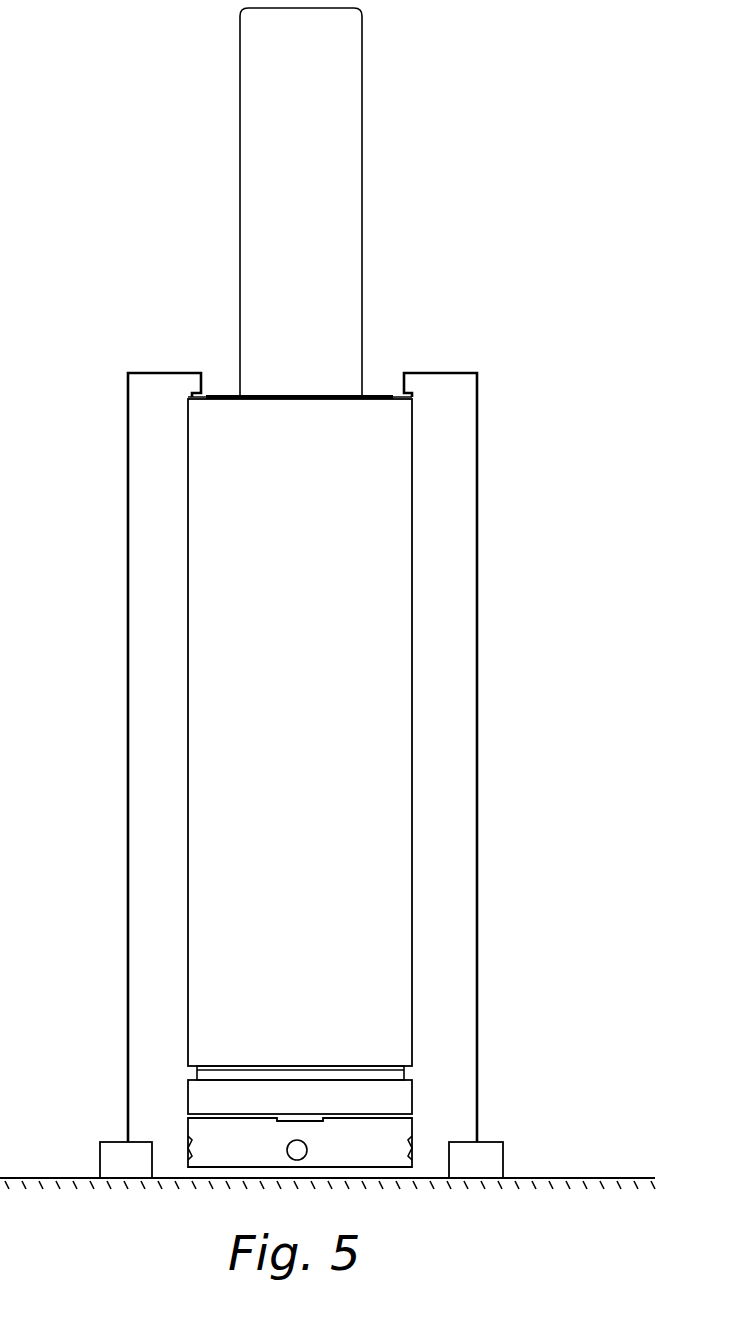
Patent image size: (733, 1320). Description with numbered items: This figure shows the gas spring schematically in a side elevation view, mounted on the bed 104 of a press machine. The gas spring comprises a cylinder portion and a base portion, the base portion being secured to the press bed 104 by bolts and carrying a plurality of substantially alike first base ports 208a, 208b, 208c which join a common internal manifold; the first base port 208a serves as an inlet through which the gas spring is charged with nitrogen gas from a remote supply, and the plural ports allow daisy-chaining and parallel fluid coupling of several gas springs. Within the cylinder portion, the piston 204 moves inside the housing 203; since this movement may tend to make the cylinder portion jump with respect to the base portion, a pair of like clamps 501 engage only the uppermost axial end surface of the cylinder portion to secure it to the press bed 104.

The piston 204 is at (350, 167).
The clamp 501 is at (128, 544).
The housing 203 is at (323, 794).
The first base port 208a is at (298, 1160).
The first base port 208b is at (188, 1148).
The first base port 208c is at (412, 1150).
The bed 104 is at (608, 1222).